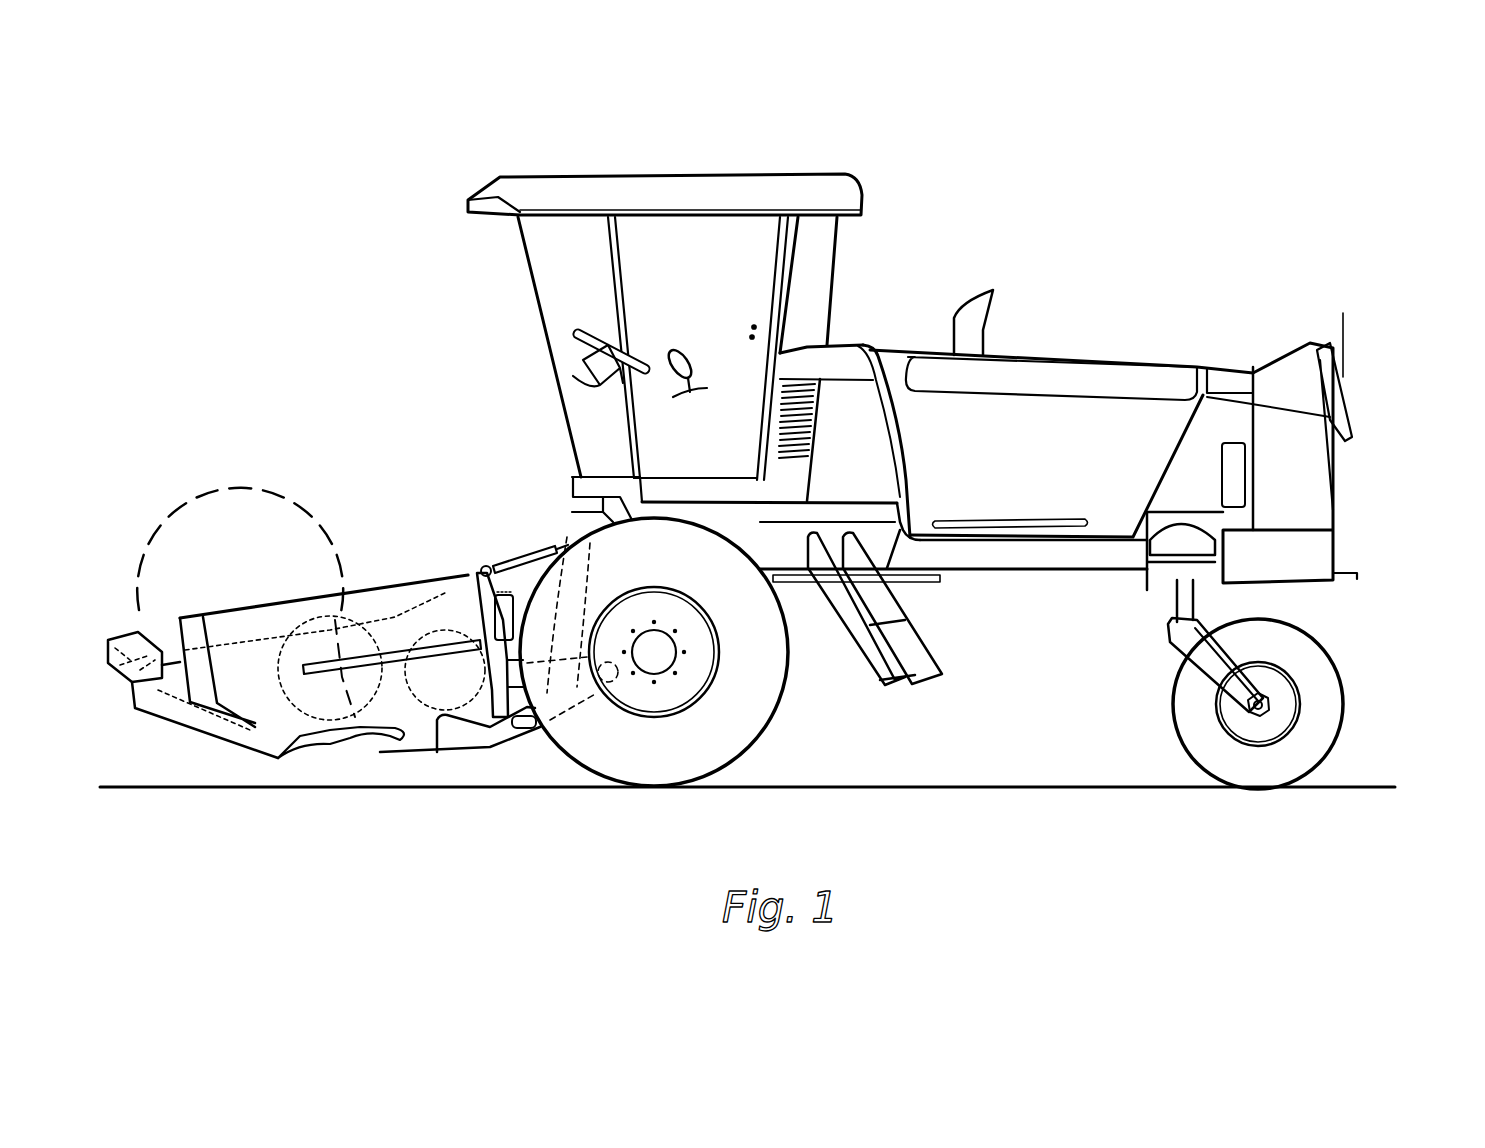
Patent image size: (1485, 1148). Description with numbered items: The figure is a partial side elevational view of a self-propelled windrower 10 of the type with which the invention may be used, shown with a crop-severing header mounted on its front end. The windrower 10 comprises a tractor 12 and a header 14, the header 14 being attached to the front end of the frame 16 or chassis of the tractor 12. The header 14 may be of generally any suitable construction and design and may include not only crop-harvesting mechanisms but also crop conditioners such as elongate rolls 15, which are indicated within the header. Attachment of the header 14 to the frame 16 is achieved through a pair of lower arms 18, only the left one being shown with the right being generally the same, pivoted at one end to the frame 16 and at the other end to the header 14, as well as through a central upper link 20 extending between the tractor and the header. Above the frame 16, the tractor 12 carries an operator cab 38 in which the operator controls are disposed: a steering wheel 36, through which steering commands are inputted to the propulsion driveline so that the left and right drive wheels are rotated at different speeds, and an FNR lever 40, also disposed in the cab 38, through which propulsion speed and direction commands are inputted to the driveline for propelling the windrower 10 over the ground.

The self-propelled windrower 10 is at (780, 475).
The tractor 12 is at (1338, 507).
The header 14 is at (363, 590).
The elongate rolls 15 is at (463, 630).
The frame 16 is at (1035, 585).
The lower arms 18 is at (492, 735).
The central upper link 20 is at (530, 560).
The steering wheel 36 is at (593, 332).
The operator cab 38 is at (733, 175).
The FNR lever 40 is at (687, 350).